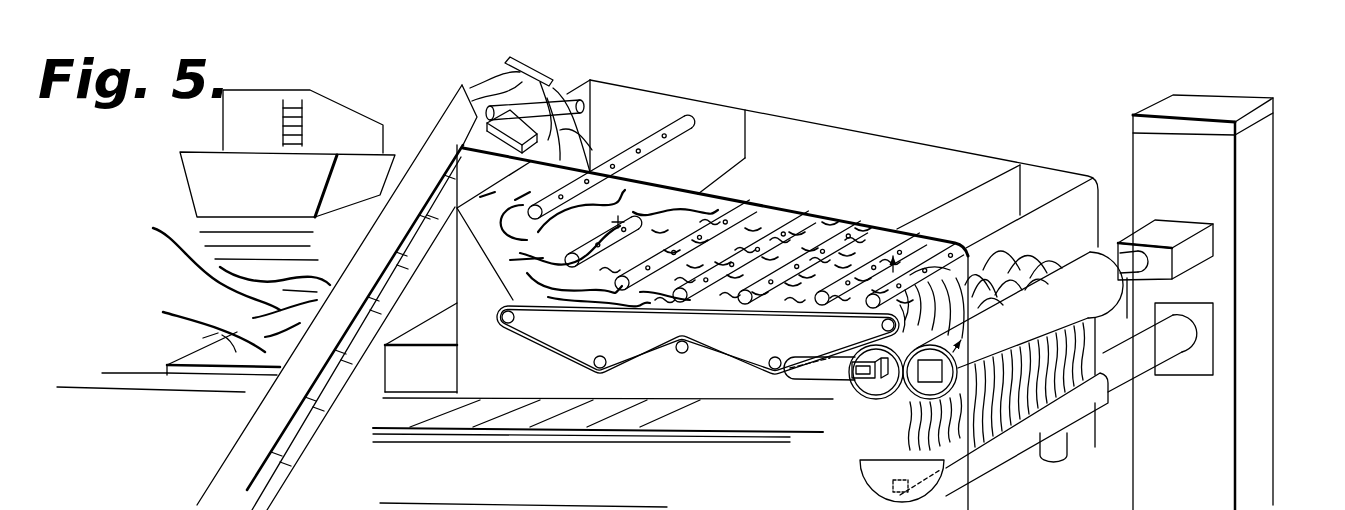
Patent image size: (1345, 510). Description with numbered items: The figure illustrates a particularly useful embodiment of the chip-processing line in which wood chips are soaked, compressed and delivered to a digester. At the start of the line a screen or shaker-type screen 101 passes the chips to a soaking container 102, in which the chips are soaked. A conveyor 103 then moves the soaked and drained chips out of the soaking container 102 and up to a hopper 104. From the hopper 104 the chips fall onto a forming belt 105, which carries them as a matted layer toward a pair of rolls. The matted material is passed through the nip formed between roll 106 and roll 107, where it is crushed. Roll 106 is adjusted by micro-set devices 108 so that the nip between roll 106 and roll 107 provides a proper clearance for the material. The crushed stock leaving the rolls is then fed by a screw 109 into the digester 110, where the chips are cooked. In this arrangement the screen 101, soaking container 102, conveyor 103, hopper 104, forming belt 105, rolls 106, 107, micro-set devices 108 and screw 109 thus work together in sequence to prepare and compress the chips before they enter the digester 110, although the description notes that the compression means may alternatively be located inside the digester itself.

The screen 101 is at (235, 183).
The soaking container 102 is at (195, 344).
The conveyor 103 is at (338, 398).
The hopper 104 is at (632, 128).
The forming belt 105 is at (537, 346).
The roll 106 is at (853, 400).
The roll 107 is at (927, 383).
The micro-set devices 108 is at (821, 386).
The screw 109 is at (903, 469).
The digester 110 is at (1247, 323).